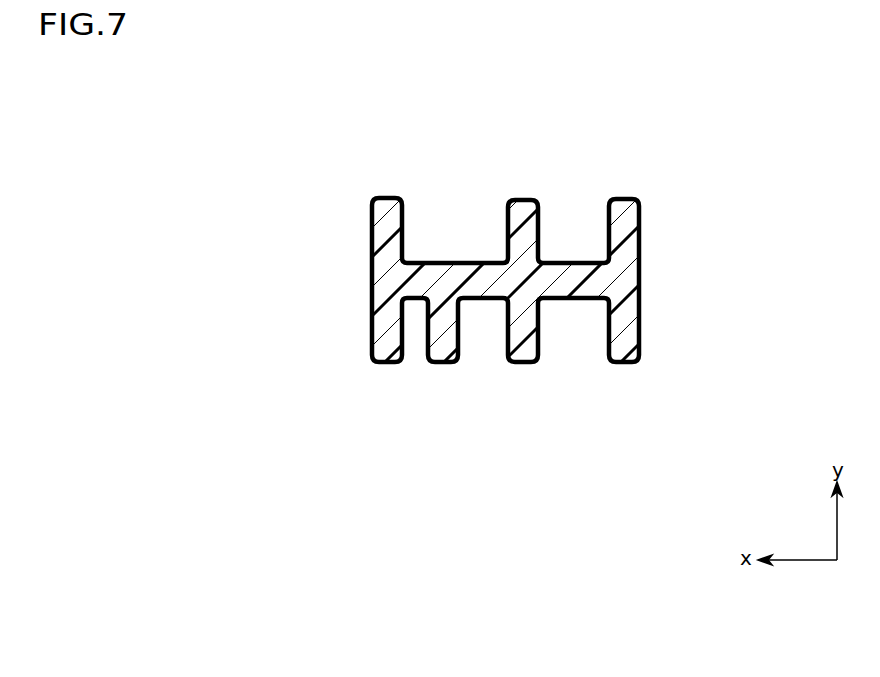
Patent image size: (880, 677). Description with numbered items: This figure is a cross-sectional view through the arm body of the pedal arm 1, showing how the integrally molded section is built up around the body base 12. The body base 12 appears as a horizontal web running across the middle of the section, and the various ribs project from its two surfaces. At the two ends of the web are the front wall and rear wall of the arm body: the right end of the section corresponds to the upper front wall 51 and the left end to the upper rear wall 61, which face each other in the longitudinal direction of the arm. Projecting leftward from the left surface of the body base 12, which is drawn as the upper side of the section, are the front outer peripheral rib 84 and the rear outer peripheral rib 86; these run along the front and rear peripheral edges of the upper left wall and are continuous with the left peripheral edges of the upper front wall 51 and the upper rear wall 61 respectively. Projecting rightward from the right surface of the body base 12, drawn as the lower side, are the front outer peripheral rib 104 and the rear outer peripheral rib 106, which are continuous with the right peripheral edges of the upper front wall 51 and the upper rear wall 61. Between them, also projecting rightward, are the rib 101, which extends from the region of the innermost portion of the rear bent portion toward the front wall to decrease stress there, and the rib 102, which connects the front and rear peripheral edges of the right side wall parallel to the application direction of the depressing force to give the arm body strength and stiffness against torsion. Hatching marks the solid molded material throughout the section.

The pedal arm 1 is at (586, 119).
The body base 12 is at (462, 273).
The upper front wall 51 is at (636, 278).
The upper rear wall 61 is at (383, 283).
The front outer peripheral rib 84 is at (623, 217).
The rear outer peripheral rib 86 is at (385, 217).
The rib 101 is at (527, 358).
The rib 102 is at (447, 356).
The front outer peripheral rib 104 is at (627, 358).
The rear outer peripheral rib 106 is at (385, 362).